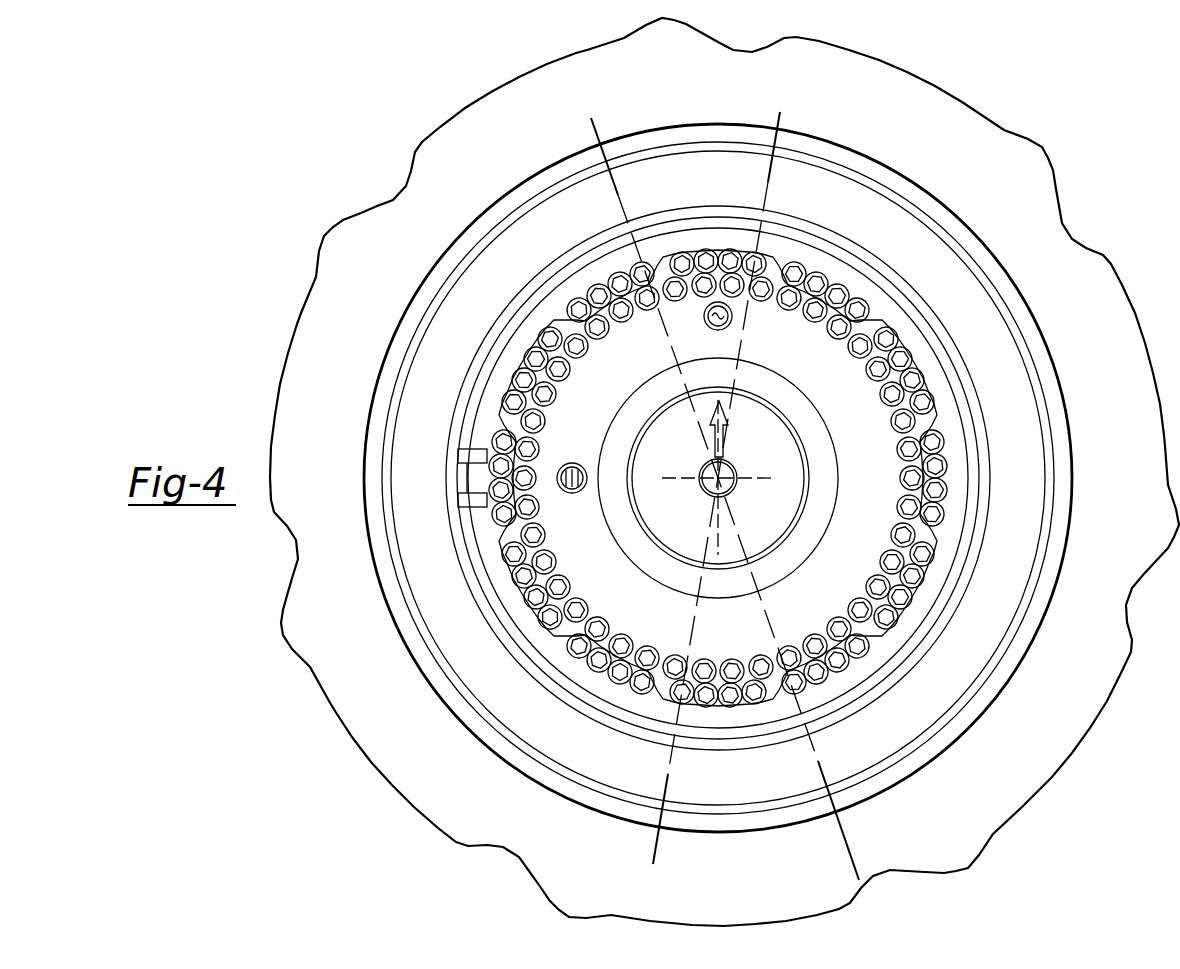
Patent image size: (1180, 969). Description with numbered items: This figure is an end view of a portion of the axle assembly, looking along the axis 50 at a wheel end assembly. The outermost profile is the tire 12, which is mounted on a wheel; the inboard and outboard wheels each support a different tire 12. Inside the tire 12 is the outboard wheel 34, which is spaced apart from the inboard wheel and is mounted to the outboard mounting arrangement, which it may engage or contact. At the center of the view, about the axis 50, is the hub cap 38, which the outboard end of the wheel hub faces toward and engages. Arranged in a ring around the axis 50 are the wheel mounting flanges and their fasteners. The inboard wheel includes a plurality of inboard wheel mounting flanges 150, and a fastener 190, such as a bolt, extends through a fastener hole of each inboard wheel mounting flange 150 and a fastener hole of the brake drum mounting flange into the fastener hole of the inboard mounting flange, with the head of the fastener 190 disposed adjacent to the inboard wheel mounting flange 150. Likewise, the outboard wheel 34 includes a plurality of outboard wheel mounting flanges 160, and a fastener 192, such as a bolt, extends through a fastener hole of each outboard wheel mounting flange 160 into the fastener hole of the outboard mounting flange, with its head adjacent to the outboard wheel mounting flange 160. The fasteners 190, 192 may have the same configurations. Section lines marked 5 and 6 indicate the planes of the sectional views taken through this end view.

The tire 12 is at (1010, 135).
The outboard wheel 34 is at (1000, 248).
The hub cap 38 is at (845, 412).
The axis 50 is at (725, 468).
The inboard wheel mounting flange 150 is at (675, 298).
The outboard wheel mounting flange 160 is at (596, 340).
The fastener 190 is at (720, 478).
The fastener 192 is at (612, 280).
The section line 5- 5 is at (826, 108).
The section line 6- 6 is at (625, 107).